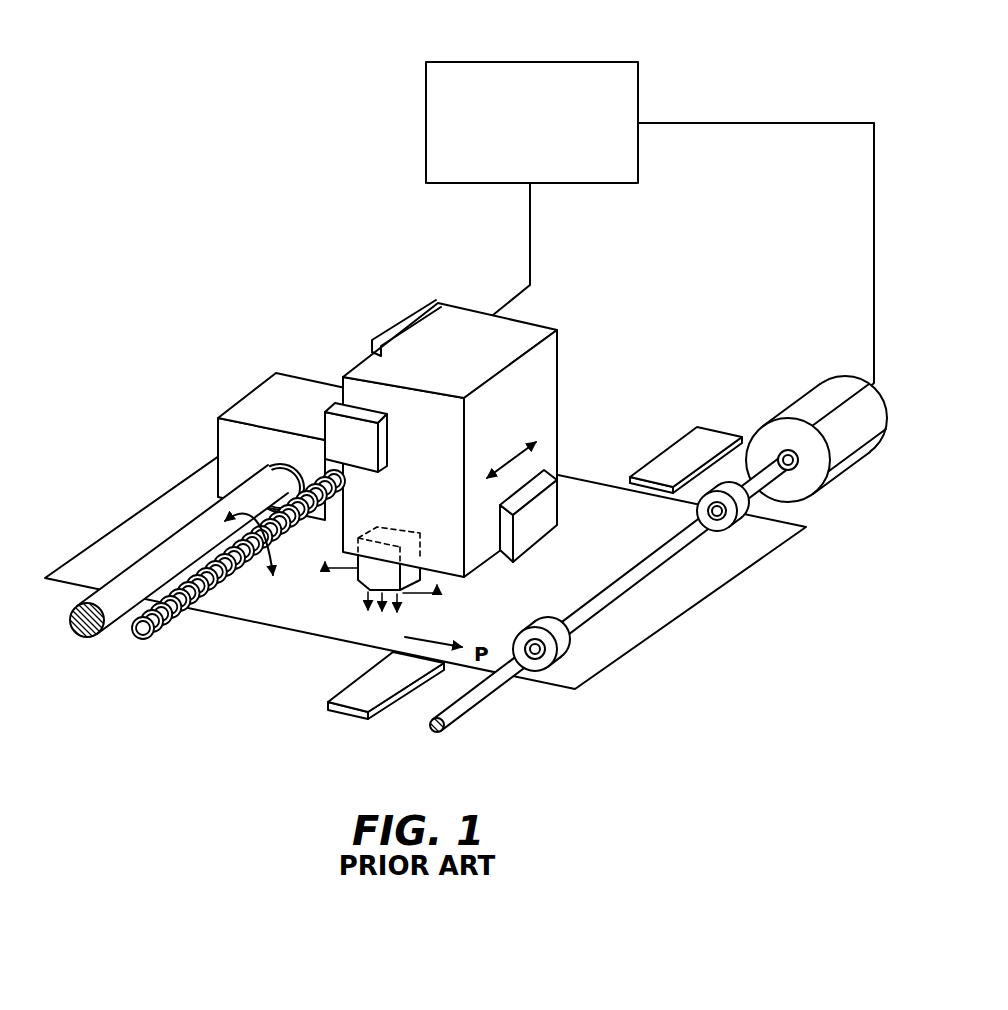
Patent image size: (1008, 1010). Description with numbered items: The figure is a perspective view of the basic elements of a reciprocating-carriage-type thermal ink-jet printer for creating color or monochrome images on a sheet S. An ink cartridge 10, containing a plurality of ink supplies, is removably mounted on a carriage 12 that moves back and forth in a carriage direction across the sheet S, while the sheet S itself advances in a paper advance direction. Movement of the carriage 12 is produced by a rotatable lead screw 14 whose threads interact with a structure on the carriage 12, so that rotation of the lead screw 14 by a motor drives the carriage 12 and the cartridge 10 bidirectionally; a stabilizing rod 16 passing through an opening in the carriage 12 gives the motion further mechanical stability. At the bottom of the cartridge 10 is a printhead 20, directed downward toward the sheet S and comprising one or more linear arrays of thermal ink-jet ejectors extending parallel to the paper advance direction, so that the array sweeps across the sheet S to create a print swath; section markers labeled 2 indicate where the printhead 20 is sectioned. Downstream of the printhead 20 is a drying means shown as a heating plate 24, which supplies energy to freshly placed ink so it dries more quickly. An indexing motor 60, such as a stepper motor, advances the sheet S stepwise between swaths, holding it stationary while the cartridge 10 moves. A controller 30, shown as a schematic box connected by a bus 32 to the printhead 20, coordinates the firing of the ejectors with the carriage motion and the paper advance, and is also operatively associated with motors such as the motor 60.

The ink cartridge 10 is at (547, 382).
The carriage 12 is at (305, 395).
The lead screw 14 is at (135, 628).
The stabilizing rod 16 is at (140, 570).
The printhead 20 is at (375, 572).
The heating plate 24 is at (362, 697).
The controller 30 is at (640, 82).
The bus 32 is at (528, 248).
The indexing motor 60 is at (783, 400).
The section line 2- 2 is at (381, 562).
The sheet S is at (677, 592).